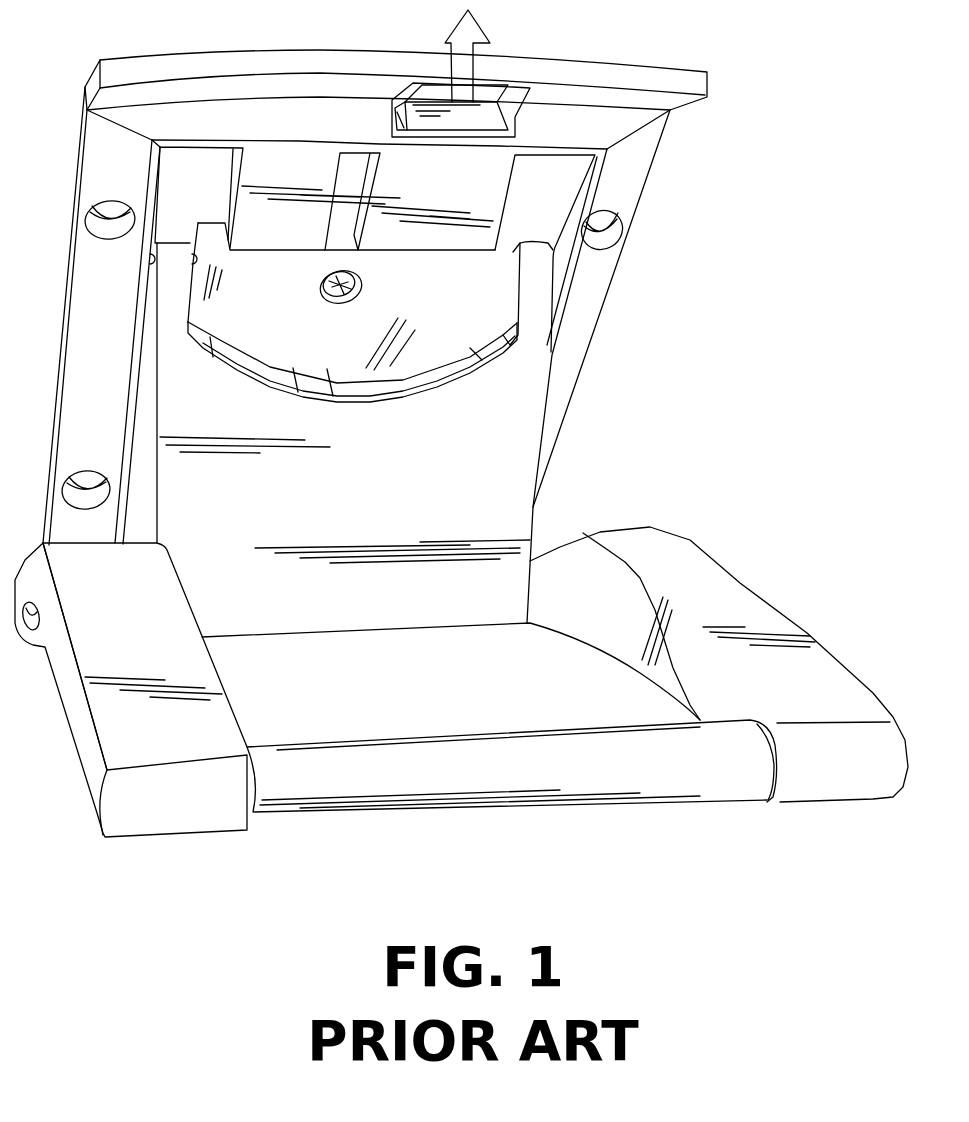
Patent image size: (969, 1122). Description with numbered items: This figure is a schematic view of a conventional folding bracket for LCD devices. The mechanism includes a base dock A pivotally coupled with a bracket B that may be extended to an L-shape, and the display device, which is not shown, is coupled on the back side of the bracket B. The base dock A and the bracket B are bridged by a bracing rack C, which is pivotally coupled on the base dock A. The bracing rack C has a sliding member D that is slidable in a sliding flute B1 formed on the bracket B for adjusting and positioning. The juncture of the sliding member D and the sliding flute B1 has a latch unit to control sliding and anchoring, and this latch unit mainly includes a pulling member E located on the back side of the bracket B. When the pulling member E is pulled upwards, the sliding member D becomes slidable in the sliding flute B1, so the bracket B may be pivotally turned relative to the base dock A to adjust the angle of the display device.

The base dock A is at (698, 575).
The bracket B is at (600, 270).
The sliding flute B1 is at (350, 191).
The bracing rack C is at (440, 440).
The sliding member D is at (460, 308).
The pulling member E is at (487, 118).